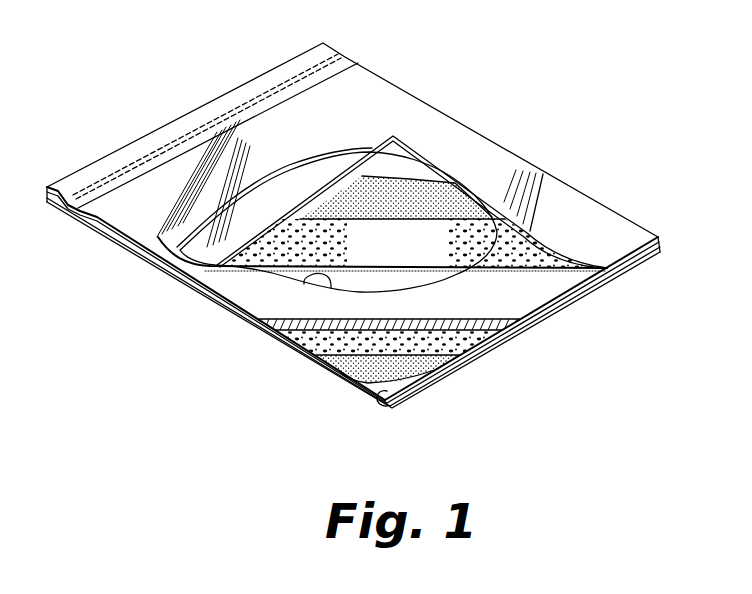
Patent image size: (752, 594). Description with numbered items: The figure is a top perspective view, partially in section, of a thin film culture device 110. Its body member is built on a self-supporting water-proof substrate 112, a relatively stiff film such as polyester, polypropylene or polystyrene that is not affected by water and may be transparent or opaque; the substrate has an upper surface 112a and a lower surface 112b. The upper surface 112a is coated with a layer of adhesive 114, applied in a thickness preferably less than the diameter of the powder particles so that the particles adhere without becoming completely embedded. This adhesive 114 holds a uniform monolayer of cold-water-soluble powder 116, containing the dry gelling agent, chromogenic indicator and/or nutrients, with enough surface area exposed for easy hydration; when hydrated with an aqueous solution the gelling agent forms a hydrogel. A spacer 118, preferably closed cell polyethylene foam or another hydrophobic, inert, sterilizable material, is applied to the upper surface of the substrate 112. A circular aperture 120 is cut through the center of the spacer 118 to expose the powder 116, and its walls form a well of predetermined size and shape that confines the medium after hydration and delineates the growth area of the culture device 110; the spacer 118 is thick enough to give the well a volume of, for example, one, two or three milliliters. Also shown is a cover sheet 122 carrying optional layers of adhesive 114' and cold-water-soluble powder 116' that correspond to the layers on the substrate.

The culture device 110 is at (453, 66).
The substrate 112 is at (401, 412).
The upper surface 112a is at (381, 399).
The lower surface 112b is at (363, 398).
The adhesive 114 is at (407, 391).
The adhesive layer on cover sheet 114' is at (432, 160).
The cold-water-soluble powder 116 is at (380, 359).
The cold-water-soluble powder layer on cover sheet 116' is at (414, 198).
The spacer 118 is at (250, 297).
The circular aperture 120 is at (306, 284).
The cover sheet 122 is at (600, 215).